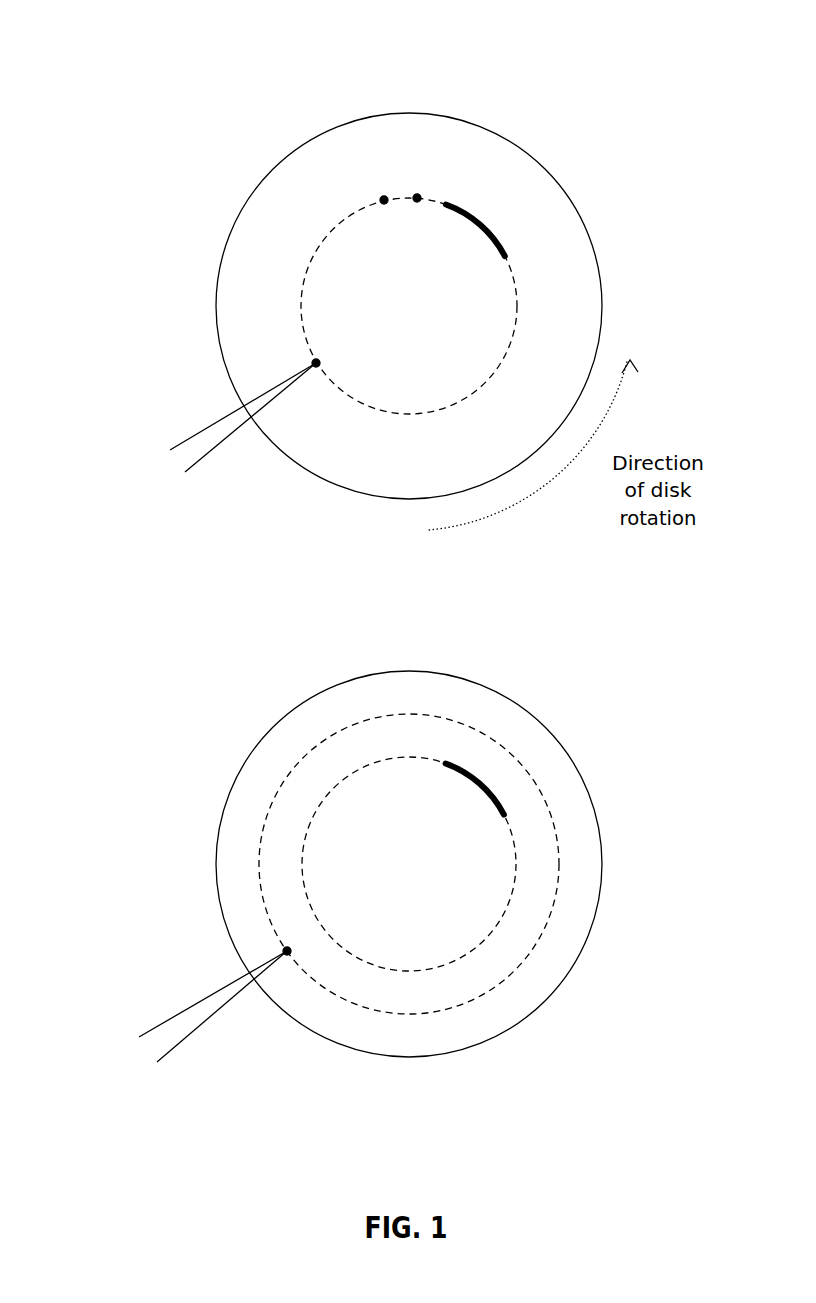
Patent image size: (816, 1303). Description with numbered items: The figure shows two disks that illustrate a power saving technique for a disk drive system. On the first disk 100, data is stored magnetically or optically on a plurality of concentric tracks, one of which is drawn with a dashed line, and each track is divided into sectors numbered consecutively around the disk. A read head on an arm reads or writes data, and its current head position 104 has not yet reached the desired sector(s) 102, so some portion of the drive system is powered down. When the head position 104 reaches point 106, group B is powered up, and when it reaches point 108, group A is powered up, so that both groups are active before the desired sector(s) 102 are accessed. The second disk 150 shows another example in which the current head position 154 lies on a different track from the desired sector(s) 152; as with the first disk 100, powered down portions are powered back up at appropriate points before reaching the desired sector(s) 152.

The disk 100 is at (407, 113).
The desired sector(s) 102 is at (485, 225).
The current head position 104 is at (290, 362).
The power up group B 106 is at (377, 182).
The power up group A 108 is at (416, 180).
The disk 150 is at (407, 672).
The desired sector(s) 152 is at (485, 783).
The current head position 154 is at (265, 951).